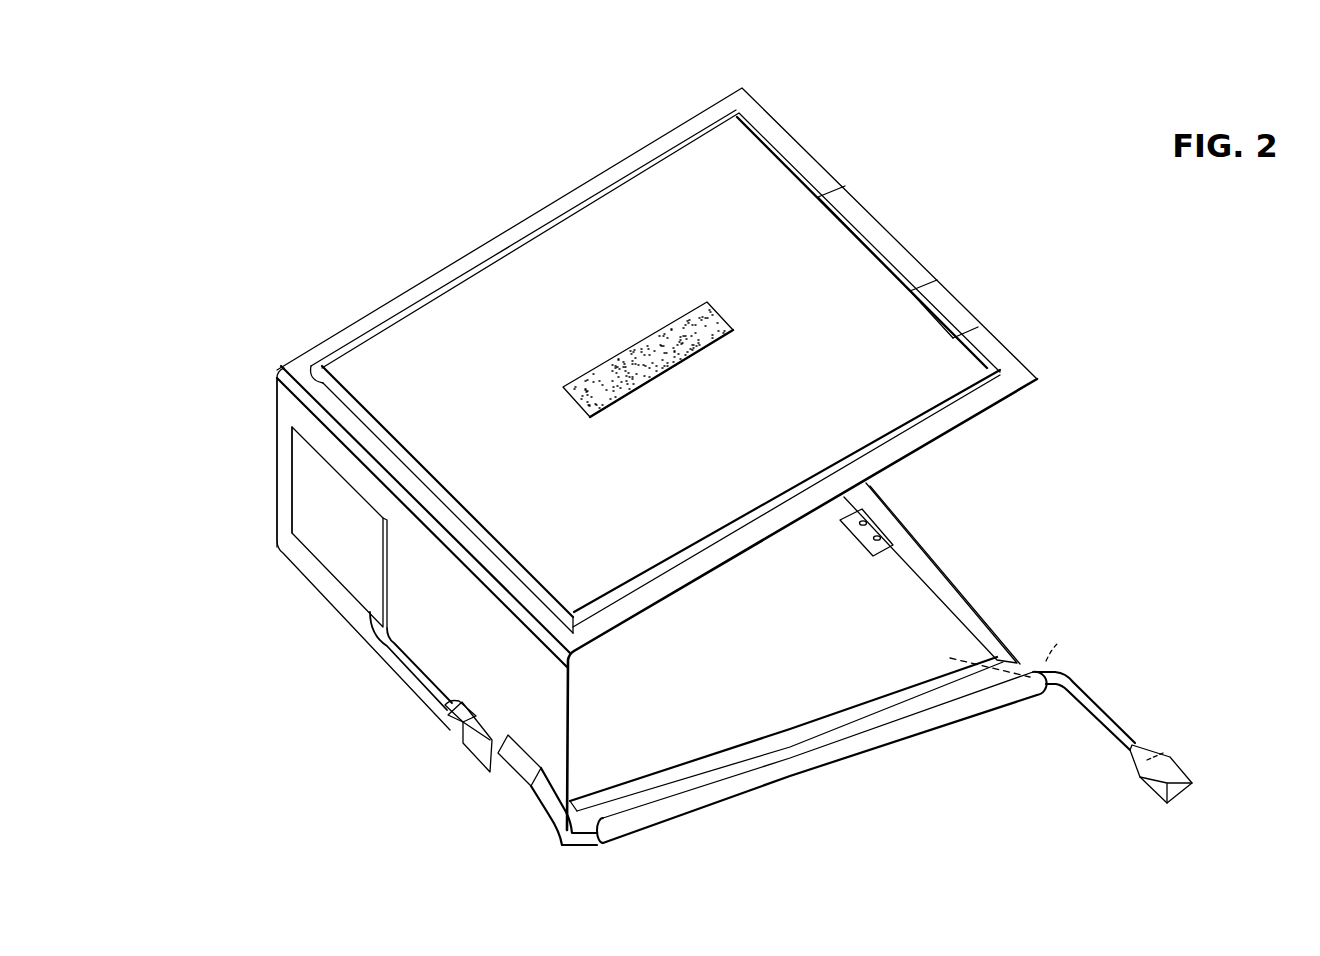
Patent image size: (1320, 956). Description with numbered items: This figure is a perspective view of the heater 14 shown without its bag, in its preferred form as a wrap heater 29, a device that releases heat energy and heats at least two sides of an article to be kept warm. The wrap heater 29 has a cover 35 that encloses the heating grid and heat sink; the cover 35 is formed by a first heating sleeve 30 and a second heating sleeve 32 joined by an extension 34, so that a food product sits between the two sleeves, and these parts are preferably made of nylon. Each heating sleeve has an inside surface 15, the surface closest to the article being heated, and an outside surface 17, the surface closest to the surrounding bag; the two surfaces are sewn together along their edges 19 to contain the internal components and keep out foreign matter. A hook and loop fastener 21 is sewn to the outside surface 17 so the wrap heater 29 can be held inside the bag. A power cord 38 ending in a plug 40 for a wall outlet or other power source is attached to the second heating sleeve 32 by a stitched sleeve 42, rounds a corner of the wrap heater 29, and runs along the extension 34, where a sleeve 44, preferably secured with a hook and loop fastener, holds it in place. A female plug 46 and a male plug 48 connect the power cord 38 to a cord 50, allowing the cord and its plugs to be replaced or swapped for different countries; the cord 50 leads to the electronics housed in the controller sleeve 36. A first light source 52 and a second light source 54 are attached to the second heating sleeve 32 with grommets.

The heater 14 is at (323, 240).
The inside surface 15 is at (518, 278).
The outside surface 17 is at (647, 198).
The edges 19 is at (567, 222).
The hook and loop fastener 21 is at (640, 348).
The wrap heater 29 is at (375, 230).
The first heating sleeve 30 is at (778, 188).
The second heating sleeve 32 is at (910, 578).
The extension 34 is at (278, 484).
The cover 35 is at (870, 292).
The controller sleeve 36 is at (322, 538).
The power cord 38 is at (555, 836).
The plug 40 is at (1174, 773).
The sleeve 42 is at (832, 752).
The sleeve 44 is at (515, 766).
The female plug 46 is at (480, 748).
The male plug 48 is at (452, 716).
The cord 50 is at (397, 658).
The first light source 52 is at (864, 522).
The second light source 54 is at (880, 538).